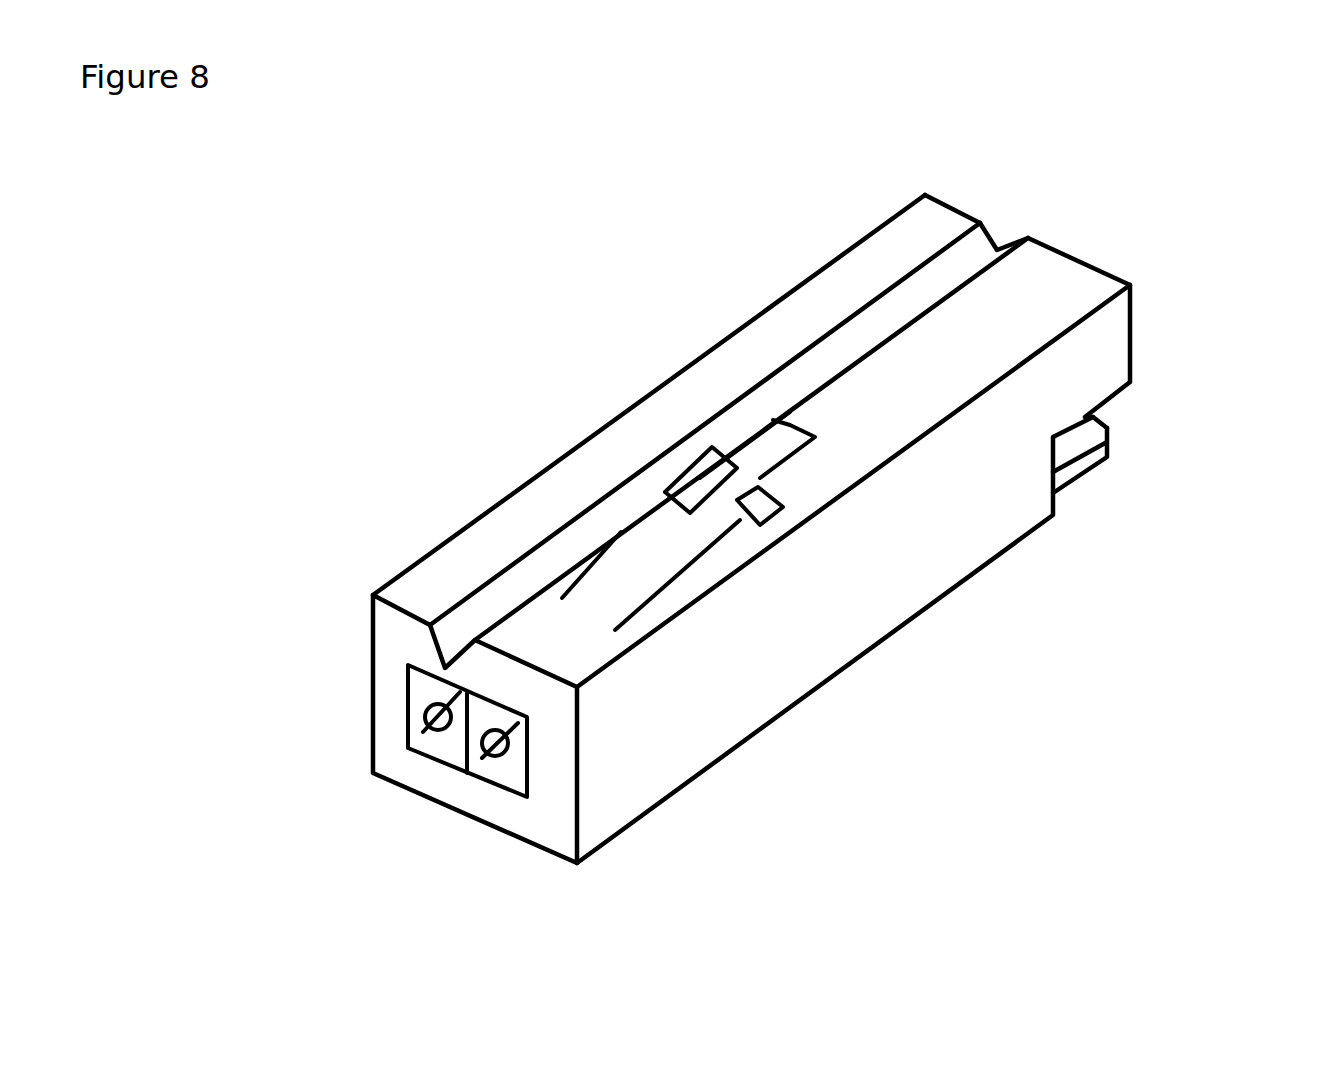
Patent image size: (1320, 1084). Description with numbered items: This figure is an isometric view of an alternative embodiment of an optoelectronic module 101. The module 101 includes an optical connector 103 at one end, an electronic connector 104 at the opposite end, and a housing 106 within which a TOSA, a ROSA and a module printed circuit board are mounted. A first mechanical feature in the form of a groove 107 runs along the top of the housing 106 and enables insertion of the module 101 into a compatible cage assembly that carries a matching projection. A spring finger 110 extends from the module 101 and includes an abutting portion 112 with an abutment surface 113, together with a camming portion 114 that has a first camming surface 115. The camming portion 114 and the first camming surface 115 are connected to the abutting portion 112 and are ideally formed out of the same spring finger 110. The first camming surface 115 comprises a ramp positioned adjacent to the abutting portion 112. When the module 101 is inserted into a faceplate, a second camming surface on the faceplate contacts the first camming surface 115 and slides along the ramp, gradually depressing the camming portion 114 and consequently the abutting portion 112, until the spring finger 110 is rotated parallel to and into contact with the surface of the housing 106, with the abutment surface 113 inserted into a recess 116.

The optoelectronic module 101 is at (786, 537).
The optical connector 103 is at (447, 750).
The electronic connector 104 is at (1093, 456).
The housing 106 is at (975, 507).
The groove 107 is at (977, 256).
The spring finger 110 is at (647, 573).
The abutting portion 112 is at (727, 497).
The abutment surface 113 is at (768, 478).
The camming portion 114 is at (695, 492).
The first camming surface 115 is at (762, 453).
The recess 116 is at (760, 527).